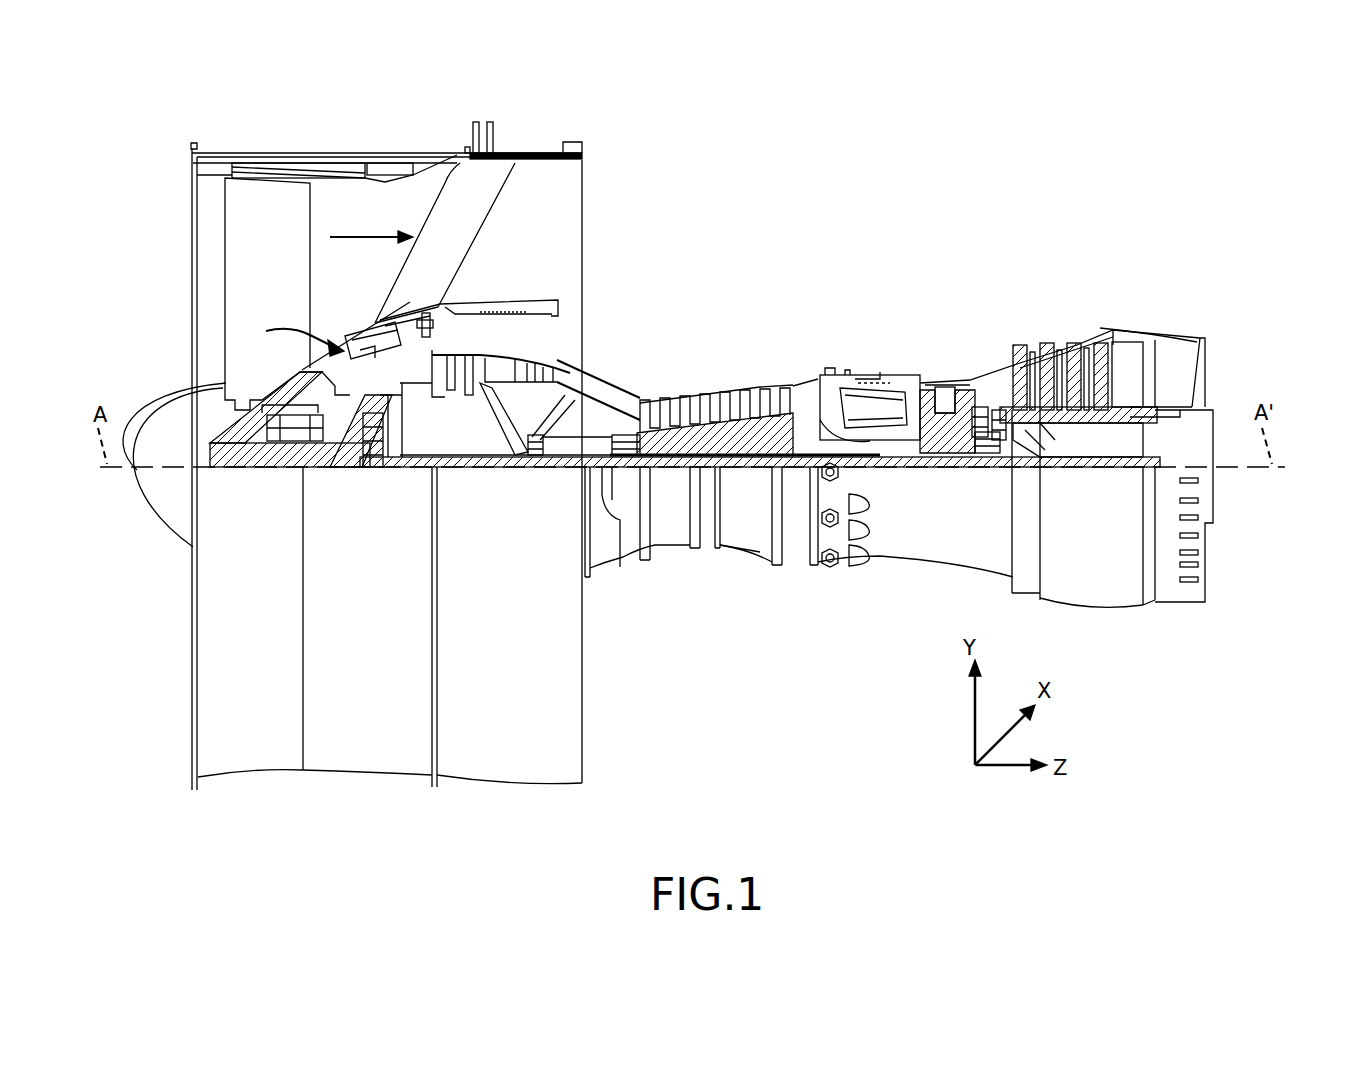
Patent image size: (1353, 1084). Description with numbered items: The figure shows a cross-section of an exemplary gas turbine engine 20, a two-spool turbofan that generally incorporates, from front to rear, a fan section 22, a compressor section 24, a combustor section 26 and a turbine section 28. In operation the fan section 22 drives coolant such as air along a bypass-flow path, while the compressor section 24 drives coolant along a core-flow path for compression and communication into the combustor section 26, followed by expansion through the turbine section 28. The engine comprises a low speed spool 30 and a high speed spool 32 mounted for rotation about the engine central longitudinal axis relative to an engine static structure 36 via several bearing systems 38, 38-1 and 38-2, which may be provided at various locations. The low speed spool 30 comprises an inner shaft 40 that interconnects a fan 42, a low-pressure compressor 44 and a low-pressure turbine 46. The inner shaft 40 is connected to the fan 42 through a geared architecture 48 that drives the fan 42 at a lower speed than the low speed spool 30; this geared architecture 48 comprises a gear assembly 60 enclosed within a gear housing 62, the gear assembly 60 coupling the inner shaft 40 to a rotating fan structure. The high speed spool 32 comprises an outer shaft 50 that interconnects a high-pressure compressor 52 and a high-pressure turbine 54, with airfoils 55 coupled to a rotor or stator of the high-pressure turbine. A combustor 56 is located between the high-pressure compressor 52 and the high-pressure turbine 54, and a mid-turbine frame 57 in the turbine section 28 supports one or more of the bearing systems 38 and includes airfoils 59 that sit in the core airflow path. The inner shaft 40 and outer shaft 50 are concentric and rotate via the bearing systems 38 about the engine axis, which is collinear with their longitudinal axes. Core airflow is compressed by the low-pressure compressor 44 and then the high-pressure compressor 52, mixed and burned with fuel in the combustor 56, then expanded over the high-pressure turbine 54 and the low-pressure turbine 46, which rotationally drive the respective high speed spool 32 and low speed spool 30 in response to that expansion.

The gas turbine engine 20 is at (922, 188).
The fan section 22 is at (430, 128).
The compressor section 24 is at (442, 266).
The combustor section 26 is at (925, 265).
The turbine section 28 is at (1145, 265).
The low speed spool 30 is at (753, 484).
The high speed spool 32 is at (792, 435).
The engine static structure 36 is at (363, 752).
The bearing system 38 is at (985, 455).
The bearing system 38-1 is at (278, 448).
The bearing system 38-2 is at (535, 455).
The inner shaft 40 is at (618, 552).
The fan 42 is at (278, 280).
The low-pressure compressor 44 is at (513, 362).
The low-pressure turbine 46 is at (1068, 350).
The geared architecture 48 is at (396, 488).
The outer shaft 50 is at (875, 455).
The high-pressure compressor 52 is at (732, 433).
The high-pressure turbine 54 is at (945, 385).
The airfoils 55 is at (925, 385).
The combustor 56 is at (870, 400).
The mid-turbine frame 57 is at (985, 405).
The airfoils 59 is at (1005, 405).
The gear assembly 60 is at (408, 450).
The gear housing 62 is at (400, 416).